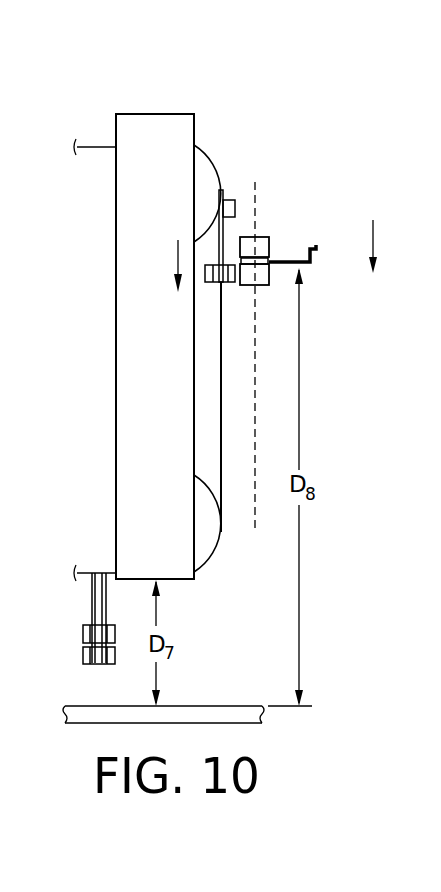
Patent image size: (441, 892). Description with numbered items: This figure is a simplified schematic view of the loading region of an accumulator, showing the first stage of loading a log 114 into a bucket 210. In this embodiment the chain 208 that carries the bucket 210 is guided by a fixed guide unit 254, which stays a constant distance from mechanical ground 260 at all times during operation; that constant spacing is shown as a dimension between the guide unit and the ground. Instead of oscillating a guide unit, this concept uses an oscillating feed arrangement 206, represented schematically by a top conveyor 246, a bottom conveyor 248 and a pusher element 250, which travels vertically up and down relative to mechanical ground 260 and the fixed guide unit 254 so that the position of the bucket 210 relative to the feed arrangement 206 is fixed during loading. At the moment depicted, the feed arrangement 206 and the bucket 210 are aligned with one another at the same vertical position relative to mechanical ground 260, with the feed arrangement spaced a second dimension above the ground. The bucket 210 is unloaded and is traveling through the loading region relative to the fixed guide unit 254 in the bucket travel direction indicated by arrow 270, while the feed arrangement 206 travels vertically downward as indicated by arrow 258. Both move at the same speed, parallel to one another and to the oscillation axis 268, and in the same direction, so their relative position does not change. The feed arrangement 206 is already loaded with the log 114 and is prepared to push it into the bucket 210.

The fixed guide unit 254 is at (127, 88).
The chain 208 is at (97, 147).
The bucket 210 is at (227, 192).
The oscillation axis 268 is at (255, 195).
The feed arrangement 206 is at (288, 221).
The top conveyor 246 is at (270, 246).
The arrow 258 is at (373, 237).
The pusher element 250 is at (313, 258).
The log 114 is at (270, 286).
The arrow 270 is at (178, 261).
The bottom conveyor 248 is at (241, 285).
The mechanical ground 260 is at (232, 706).